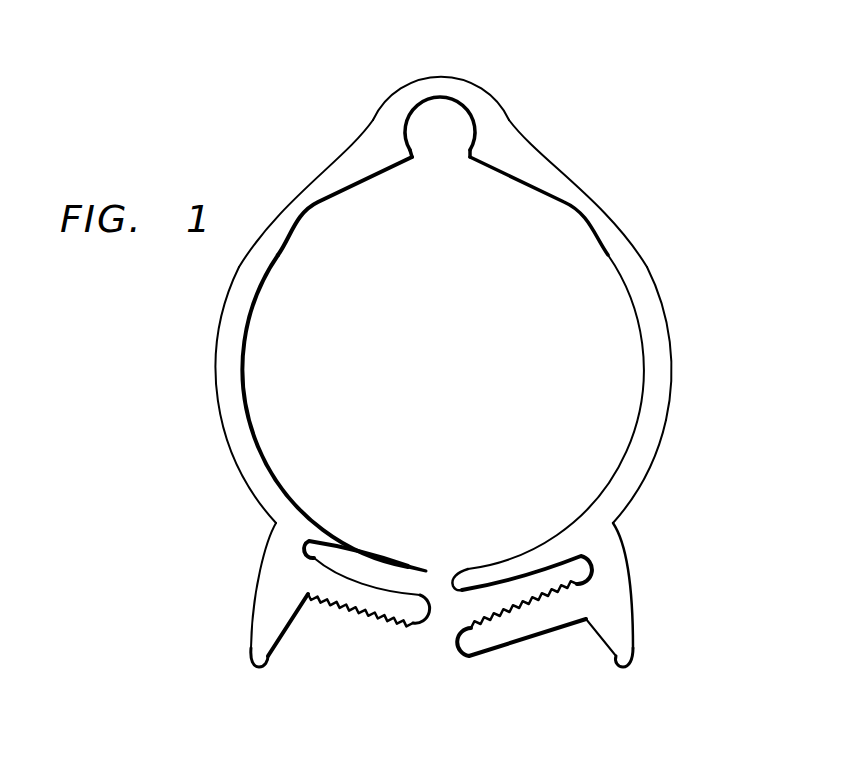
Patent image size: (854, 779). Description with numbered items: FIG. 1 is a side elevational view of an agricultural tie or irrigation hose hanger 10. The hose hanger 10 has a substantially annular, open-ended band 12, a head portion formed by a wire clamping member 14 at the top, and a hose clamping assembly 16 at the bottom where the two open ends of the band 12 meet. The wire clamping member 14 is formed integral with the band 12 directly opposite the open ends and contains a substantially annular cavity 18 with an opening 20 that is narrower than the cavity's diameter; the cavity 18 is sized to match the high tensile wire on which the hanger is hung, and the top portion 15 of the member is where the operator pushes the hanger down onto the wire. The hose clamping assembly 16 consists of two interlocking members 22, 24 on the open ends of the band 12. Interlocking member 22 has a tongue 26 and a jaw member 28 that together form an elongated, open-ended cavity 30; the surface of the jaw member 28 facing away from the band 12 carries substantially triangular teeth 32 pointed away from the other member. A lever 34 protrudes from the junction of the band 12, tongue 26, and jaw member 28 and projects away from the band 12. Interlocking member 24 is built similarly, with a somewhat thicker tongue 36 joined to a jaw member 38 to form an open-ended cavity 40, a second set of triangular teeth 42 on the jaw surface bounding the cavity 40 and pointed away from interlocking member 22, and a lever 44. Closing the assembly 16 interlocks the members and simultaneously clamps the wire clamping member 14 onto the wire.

The hose hanger 10 is at (712, 163).
The band 12 is at (673, 350).
The wire clamping member 14 is at (337, 103).
The top portion 15 is at (422, 57).
The hose clamping assembly 16 is at (698, 550).
The annular cavity 18 is at (440, 117).
The opening 20 is at (437, 173).
The interlocking member 22 is at (205, 615).
The interlocking member 24 is at (683, 616).
The tongue 26 is at (425, 566).
The jaw member 28 is at (378, 626).
The cavity 30 is at (345, 559).
The teeth 32 is at (346, 617).
The lever 34 is at (258, 670).
The tongue 36 is at (452, 576).
The jaw member 38 is at (459, 652).
The cavity 40 is at (548, 572).
The teeth 42 is at (502, 618).
The lever 44 is at (624, 668).